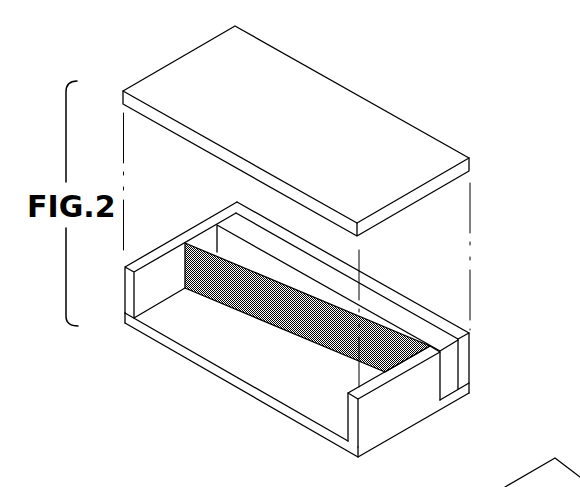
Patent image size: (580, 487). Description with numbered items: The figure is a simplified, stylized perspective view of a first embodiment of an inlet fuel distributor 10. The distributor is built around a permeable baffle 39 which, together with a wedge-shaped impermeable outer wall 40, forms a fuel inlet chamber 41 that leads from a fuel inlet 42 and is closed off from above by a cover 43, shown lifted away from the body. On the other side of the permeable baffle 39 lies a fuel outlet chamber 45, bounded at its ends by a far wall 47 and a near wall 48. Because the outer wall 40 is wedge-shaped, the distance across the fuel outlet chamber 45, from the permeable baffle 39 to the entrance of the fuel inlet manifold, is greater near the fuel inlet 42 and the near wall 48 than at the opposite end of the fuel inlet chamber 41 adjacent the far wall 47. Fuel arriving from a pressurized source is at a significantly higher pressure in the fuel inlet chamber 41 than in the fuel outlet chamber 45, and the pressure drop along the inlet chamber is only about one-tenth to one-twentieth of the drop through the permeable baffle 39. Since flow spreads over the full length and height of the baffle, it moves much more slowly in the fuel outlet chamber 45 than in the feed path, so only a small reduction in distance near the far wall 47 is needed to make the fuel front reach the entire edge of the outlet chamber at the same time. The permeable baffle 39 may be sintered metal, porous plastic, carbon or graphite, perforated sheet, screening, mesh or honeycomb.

The inlet fuel distributor 10 is at (173, 384).
The permeable baffle 39 is at (192, 277).
The wedge-shaped impermeable outer wall 40 is at (367, 283).
The fuel inlet chamber 41 is at (393, 323).
The fuel inlet 42 is at (447, 370).
The cover 43 is at (333, 103).
The fuel outlet chamber 45 is at (253, 360).
The far wall 47 is at (148, 297).
The near wall 48 is at (385, 411).